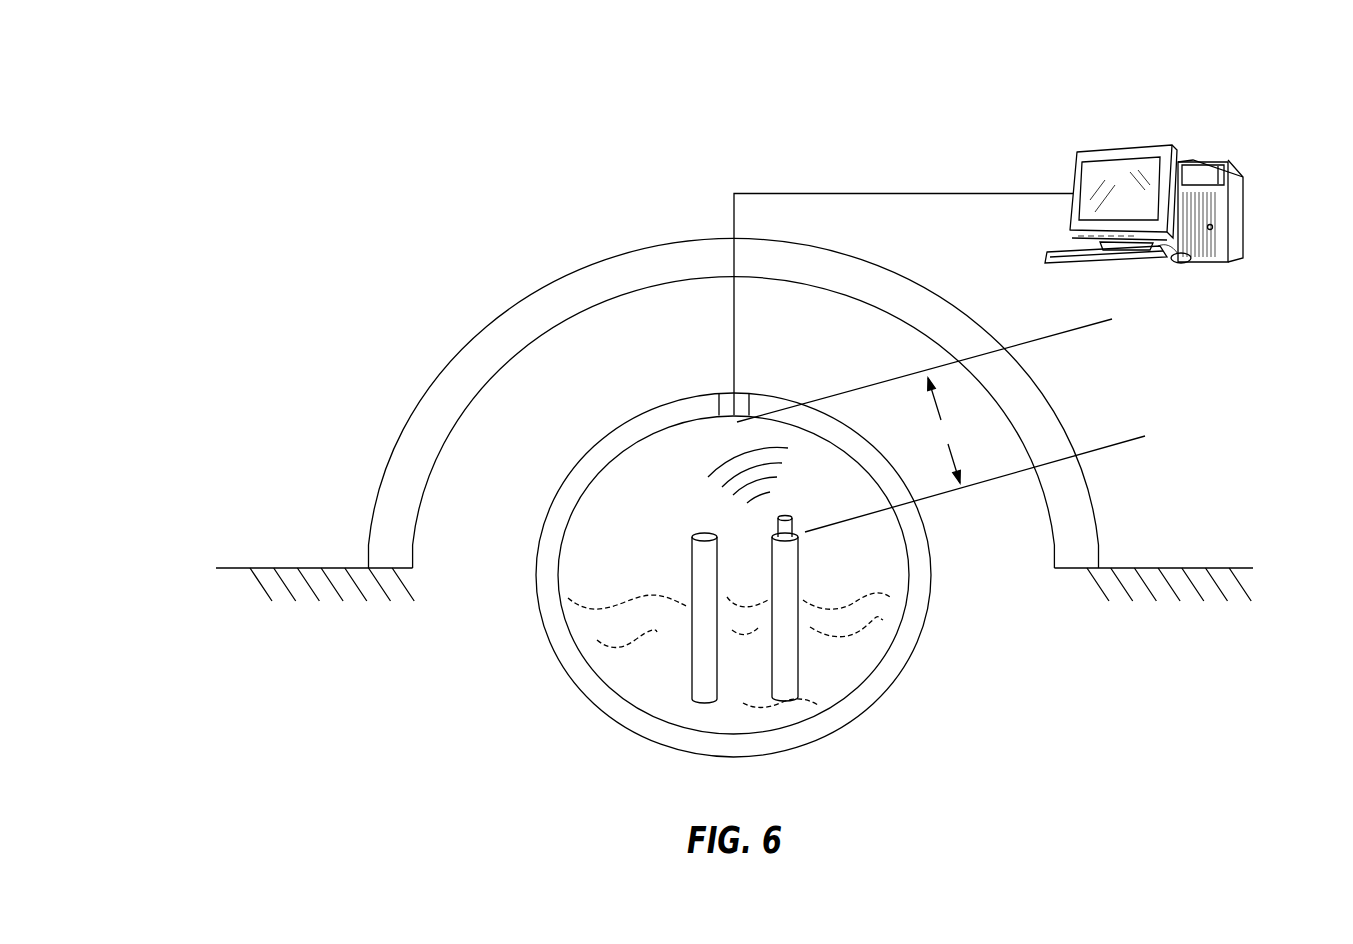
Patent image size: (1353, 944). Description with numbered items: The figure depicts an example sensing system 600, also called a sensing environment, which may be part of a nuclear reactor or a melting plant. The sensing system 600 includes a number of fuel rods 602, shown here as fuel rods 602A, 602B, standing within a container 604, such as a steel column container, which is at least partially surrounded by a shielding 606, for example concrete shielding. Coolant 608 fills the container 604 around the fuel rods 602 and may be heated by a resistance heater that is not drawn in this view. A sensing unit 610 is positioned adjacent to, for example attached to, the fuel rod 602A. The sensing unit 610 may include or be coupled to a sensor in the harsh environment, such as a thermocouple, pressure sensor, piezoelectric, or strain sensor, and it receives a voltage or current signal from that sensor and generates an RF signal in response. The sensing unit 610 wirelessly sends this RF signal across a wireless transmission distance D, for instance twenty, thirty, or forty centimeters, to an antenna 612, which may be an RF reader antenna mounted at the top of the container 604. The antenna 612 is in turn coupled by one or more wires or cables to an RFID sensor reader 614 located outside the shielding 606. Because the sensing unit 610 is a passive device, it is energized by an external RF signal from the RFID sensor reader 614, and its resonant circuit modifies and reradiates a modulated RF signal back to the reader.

The sensing system 600 is at (226, 90).
The fuel rods 602 is at (767, 660).
The fuel rod 602A is at (783, 562).
The fuel rod 602B is at (703, 563).
The container 604 is at (570, 650).
The shielding 606 is at (434, 363).
The coolant 608 is at (830, 645).
The sensing unit 610 is at (800, 535).
The antenna 612 is at (727, 422).
The RFID sensor reader 614 is at (1243, 213).